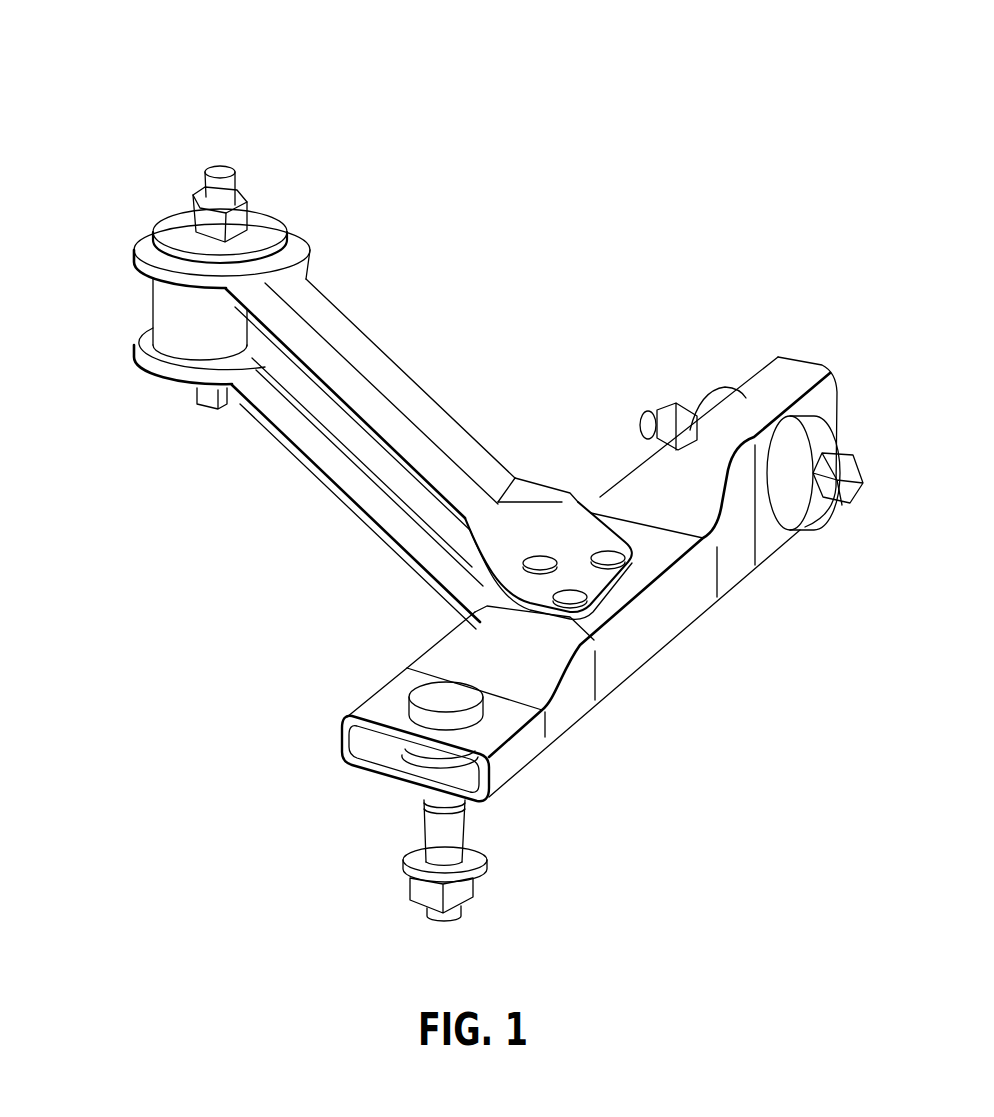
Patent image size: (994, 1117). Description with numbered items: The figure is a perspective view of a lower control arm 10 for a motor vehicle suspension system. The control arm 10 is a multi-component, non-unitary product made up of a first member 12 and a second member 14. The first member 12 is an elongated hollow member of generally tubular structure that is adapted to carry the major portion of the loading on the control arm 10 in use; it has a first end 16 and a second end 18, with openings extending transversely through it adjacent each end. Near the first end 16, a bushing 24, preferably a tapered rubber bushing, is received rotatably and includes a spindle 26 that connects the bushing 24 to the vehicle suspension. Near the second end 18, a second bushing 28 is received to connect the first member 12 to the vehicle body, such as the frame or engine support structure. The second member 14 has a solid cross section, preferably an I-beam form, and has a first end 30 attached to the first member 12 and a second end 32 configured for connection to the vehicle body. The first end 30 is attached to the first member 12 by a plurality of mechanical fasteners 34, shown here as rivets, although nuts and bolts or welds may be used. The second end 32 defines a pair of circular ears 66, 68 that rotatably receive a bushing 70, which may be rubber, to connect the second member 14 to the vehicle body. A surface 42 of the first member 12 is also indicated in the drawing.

The lower control arm 10 is at (333, 68).
The first member 12 is at (722, 598).
The second member 14 is at (394, 362).
The first end 16 is at (342, 718).
The second end 18 is at (800, 362).
The bushing 24 is at (399, 675).
The spindle 26 is at (465, 823).
The second bushing 28 is at (820, 523).
The first end 30 is at (581, 508).
The second end 32 is at (307, 247).
The mechanical fasteners 34 is at (611, 563).
The mounting surface 42 is at (640, 522).
The circular ear 66 is at (138, 268).
The circular ear 68 is at (140, 353).
The bushing 70 is at (272, 212).